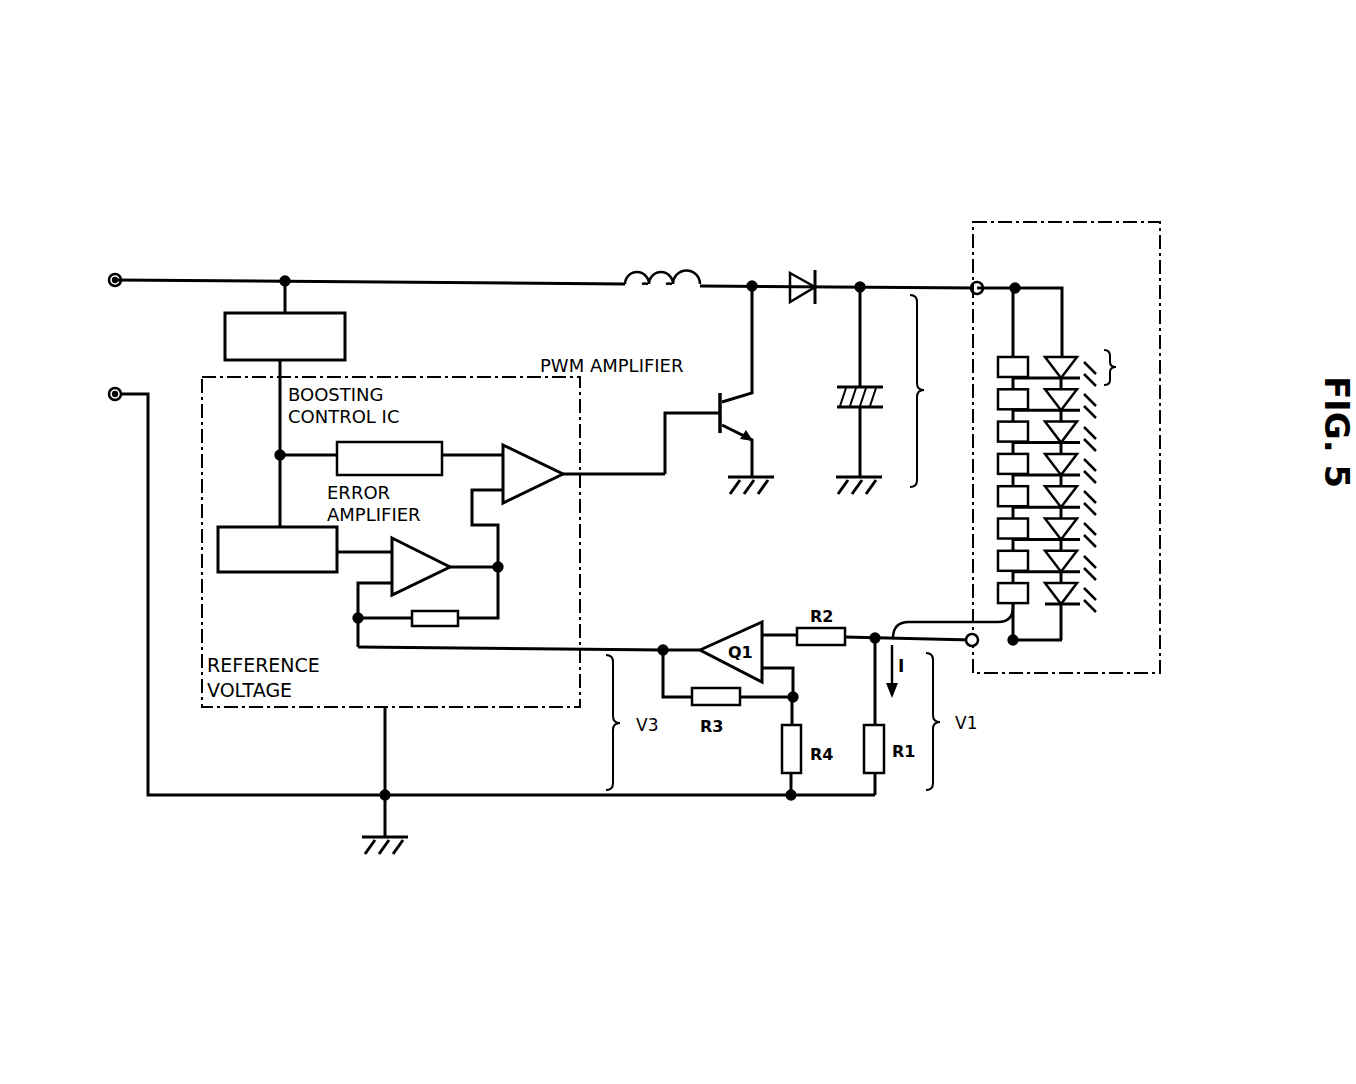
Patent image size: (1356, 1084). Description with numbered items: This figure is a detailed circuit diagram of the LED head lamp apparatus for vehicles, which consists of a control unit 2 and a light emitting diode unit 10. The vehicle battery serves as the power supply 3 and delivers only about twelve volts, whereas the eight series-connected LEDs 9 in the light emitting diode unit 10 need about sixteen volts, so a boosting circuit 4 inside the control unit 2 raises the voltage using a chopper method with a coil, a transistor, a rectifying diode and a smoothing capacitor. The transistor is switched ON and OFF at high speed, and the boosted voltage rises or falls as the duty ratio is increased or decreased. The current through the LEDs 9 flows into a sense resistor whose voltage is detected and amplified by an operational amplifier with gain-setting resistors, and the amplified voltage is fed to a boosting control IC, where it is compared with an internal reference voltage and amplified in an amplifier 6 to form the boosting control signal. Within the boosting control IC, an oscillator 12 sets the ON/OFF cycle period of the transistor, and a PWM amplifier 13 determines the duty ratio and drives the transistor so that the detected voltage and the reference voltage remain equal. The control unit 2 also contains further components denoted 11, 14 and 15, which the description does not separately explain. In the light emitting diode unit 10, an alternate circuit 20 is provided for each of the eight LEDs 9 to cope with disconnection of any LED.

The control unit 2 is at (428, 243).
The power supply 3 is at (116, 273).
The boosting circuit 4 is at (887, 250).
The amplifier 6 is at (267, 573).
The LEDs 9 is at (1078, 352).
The light emitting diode unit 10 is at (1016, 222).
The 5 V power supply 11 is at (345, 330).
The oscillator 12 is at (442, 444).
The PWM amplifier 13 is at (518, 445).
The error amplifier 14 is at (432, 556).
The feedback resistor 15 is at (445, 628).
The alternate circuit 20 is at (998, 432).